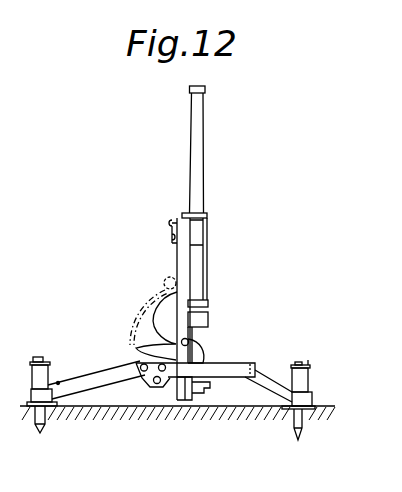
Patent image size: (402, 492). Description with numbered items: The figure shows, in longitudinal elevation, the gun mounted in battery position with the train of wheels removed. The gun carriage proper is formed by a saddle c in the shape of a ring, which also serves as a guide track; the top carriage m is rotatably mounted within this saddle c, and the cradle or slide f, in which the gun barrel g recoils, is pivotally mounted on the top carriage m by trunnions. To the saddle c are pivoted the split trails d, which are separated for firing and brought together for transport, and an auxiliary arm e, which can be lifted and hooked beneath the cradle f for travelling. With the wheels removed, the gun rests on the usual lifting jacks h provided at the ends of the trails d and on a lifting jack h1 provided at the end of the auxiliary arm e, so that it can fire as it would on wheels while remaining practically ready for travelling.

The gun barrel g is at (198, 148).
The cradle f is at (178, 257).
The top carriage m is at (194, 355).
The saddle c is at (227, 370).
The arm e is at (102, 378).
The split trails d is at (268, 380).
The lifting jack h1 is at (44, 373).
The lifting jacks h is at (297, 375).